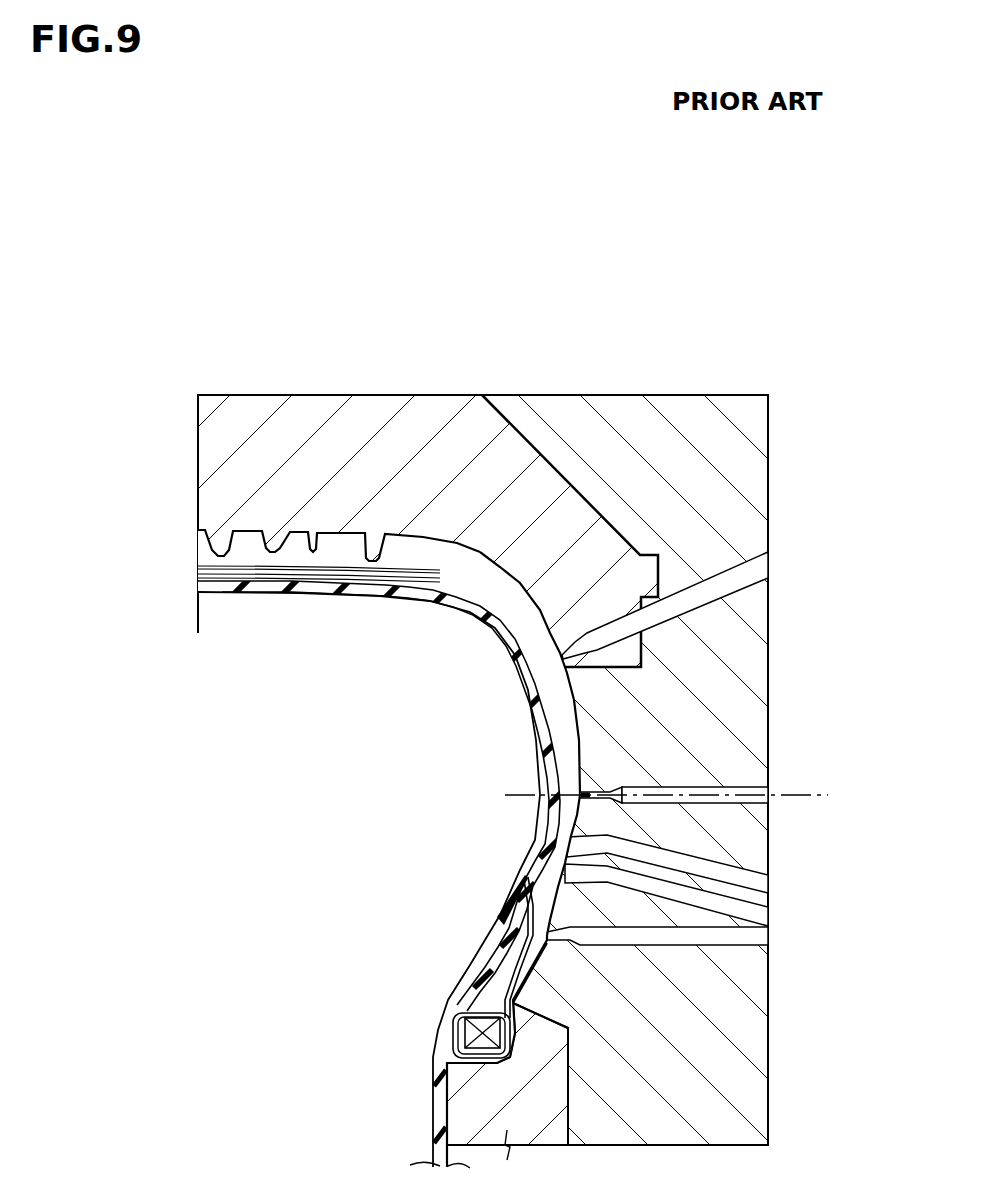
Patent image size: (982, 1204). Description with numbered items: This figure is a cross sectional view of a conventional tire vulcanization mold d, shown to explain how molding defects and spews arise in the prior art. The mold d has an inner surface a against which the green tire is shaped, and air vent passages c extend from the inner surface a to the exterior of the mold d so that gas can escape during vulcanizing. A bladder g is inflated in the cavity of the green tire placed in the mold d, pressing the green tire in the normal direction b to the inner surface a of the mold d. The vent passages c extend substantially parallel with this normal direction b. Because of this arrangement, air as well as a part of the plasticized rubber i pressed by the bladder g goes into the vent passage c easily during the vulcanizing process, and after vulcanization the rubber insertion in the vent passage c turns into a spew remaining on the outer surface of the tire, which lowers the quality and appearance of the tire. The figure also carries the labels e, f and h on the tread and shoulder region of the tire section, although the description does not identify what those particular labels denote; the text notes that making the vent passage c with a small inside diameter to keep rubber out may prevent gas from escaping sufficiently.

The inner surface a is at (583, 768).
The normal direction b is at (795, 797).
The air vent passage c is at (713, 787).
The tire vulcanization mold d is at (737, 633).
The belt layer e is at (457, 567).
The sidewall molding surface f is at (548, 605).
The bladder g is at (455, 978).
The tread groove h is at (343, 548).
The plasticized rubber i is at (587, 633).